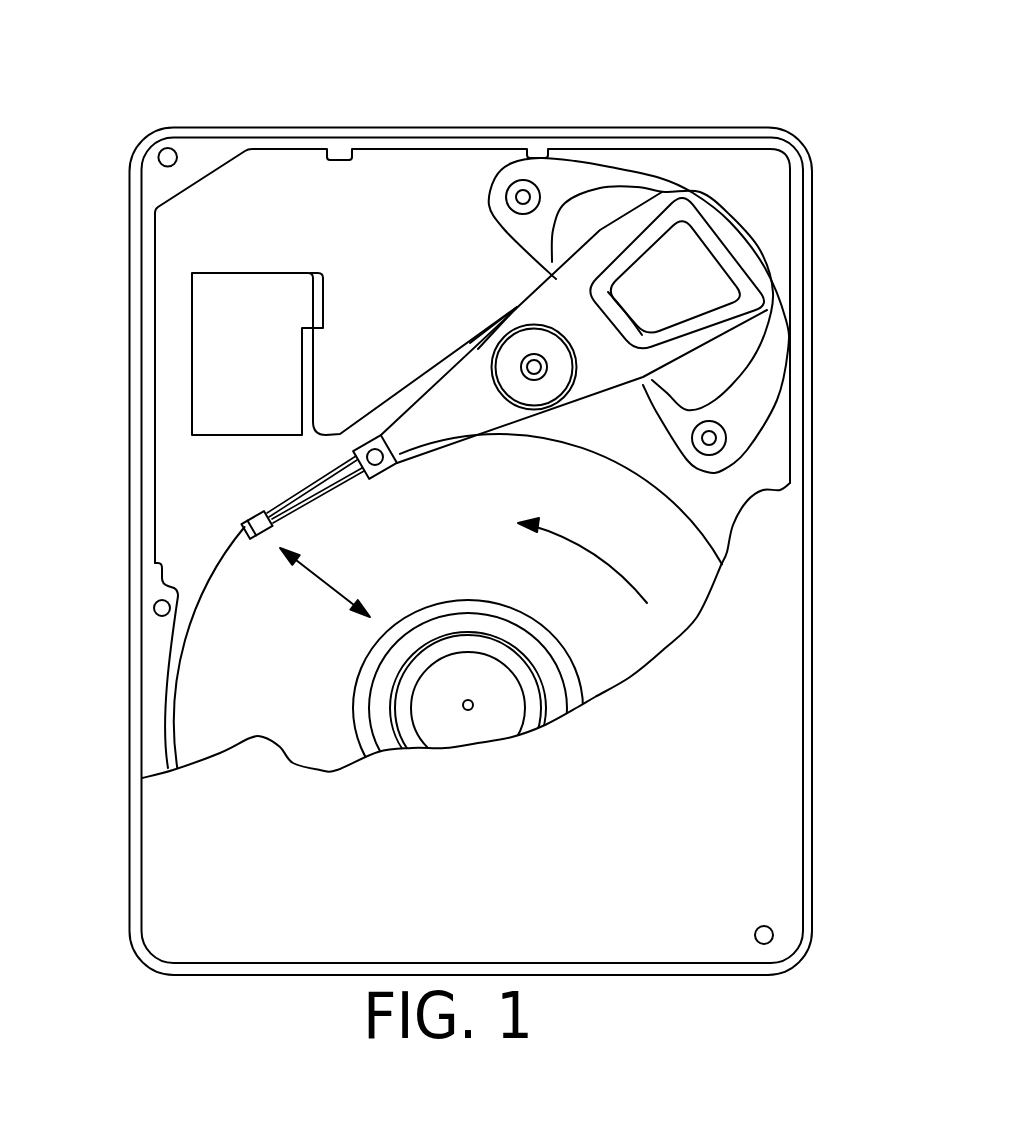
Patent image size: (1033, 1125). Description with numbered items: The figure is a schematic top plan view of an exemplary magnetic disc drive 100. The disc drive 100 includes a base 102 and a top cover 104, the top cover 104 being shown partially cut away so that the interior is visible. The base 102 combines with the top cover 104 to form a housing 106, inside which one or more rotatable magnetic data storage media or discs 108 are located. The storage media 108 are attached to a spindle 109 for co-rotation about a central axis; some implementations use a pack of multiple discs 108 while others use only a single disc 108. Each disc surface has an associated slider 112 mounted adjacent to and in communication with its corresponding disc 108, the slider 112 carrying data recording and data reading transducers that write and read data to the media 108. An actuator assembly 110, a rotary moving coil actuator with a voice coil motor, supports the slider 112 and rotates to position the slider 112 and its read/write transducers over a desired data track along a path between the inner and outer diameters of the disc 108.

The magnetic disc drive 100 is at (205, 52).
The base 102 is at (431, 250).
The top cover 104 is at (497, 836).
The housing 106 is at (812, 446).
The magnetic data storage media or discs 108 is at (450, 555).
The spindle 109 is at (462, 706).
The actuator assembly 110 is at (447, 407).
The slider 112 is at (244, 521).